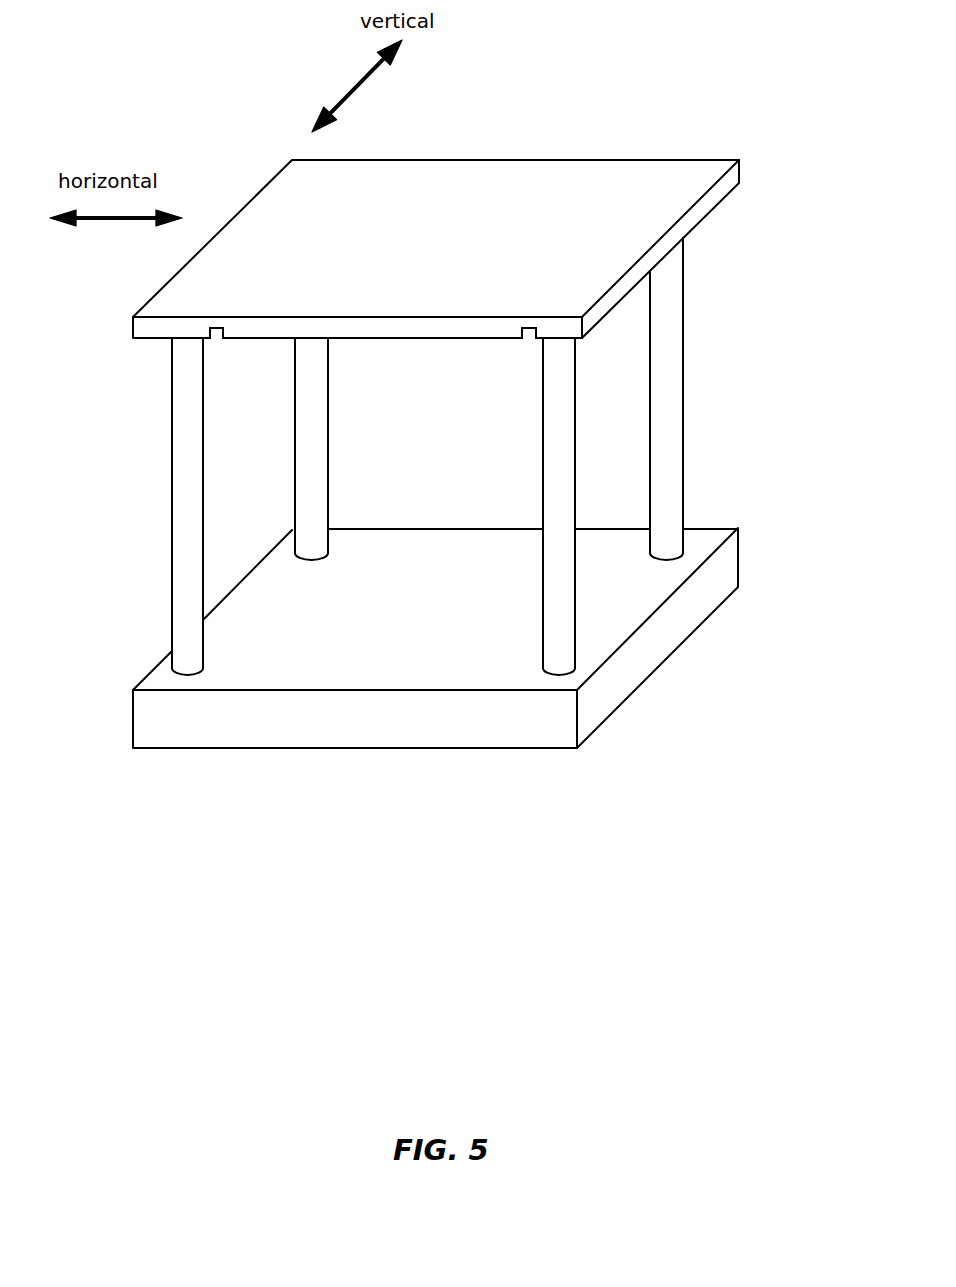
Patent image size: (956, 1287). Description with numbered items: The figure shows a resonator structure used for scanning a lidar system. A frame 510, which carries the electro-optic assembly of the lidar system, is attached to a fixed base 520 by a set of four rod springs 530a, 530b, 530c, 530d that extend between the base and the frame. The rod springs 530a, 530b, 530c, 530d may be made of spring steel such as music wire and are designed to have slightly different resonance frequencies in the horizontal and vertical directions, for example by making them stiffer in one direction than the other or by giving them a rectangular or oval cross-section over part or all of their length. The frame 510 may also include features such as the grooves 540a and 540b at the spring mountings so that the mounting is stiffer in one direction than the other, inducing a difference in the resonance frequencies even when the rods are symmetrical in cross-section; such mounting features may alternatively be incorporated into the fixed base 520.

The frame 510 is at (502, 180).
The fixed base 520 is at (385, 733).
The rod spring 530a is at (560, 492).
The rod spring 530b is at (665, 378).
The rod spring 530c is at (315, 483).
The rod spring 530d is at (195, 572).
The groove 540a is at (218, 338).
The groove 540b is at (522, 338).